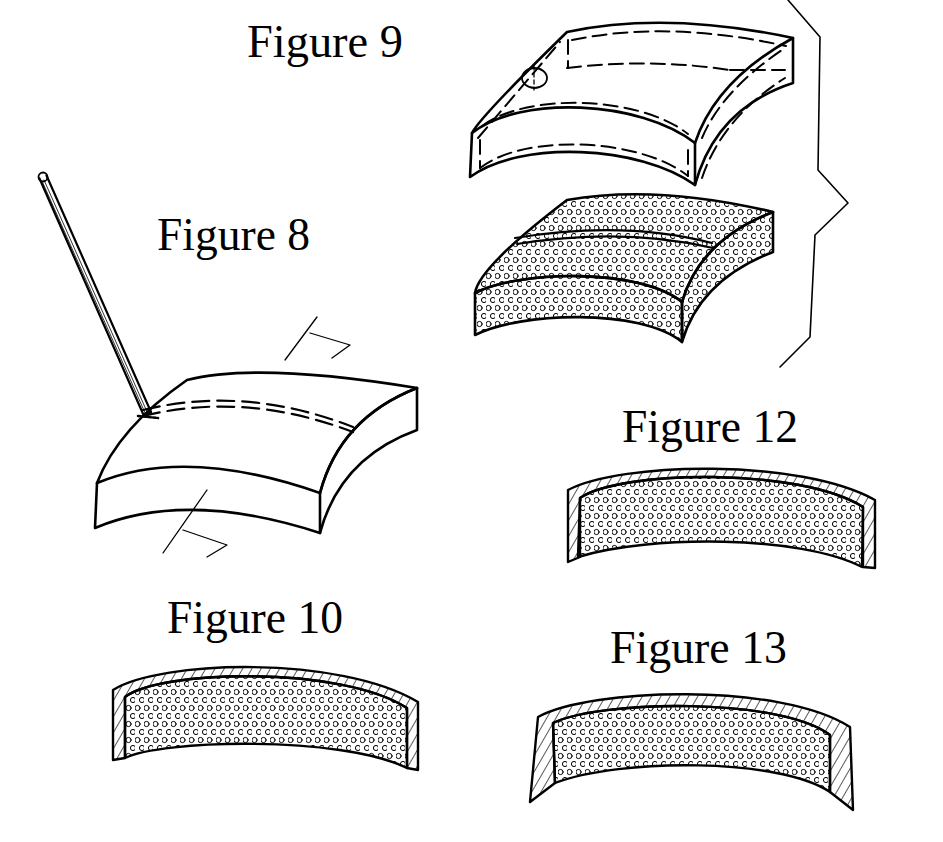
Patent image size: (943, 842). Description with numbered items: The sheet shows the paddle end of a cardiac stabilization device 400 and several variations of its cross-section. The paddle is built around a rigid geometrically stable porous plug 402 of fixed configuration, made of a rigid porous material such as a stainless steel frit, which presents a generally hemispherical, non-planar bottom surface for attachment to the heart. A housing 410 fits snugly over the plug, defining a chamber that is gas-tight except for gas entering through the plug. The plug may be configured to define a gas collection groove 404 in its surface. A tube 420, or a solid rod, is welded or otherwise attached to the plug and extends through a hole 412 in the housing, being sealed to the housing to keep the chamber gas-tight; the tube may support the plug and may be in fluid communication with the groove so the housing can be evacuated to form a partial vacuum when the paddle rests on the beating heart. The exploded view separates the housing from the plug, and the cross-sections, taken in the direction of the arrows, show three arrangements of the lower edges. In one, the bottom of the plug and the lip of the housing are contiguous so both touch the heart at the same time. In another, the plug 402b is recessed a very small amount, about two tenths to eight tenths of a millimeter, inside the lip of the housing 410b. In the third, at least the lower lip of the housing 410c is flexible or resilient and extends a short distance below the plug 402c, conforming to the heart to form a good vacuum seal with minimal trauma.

In FIG. 8, the cardiac stabilization device 400 is at (355, 472).
In FIG. 9, the geometrically stable porous plug 402 is at (507, 265).
In FIG. 10, the geometrically stable porous plug 402 is at (240, 733).
In FIG. 12, the foam core 402b is at (670, 533).
In FIG. 13, the geometrically stable porous plug 402c is at (658, 760).
In FIG. 9, the gas collection groove 404 is at (520, 237).
In FIG. 8, the housing 410 is at (400, 418).
In FIG. 9, the housing 410 is at (515, 98).
In FIG. 10, the housing 410 is at (410, 772).
In FIG. 12, the outer skin / shell 410b is at (865, 560).
In FIG. 13, the housing 410c is at (840, 800).
In FIG. 9, the injection hole 412 is at (523, 72).
In FIG. 8, the tube 420 is at (120, 340).